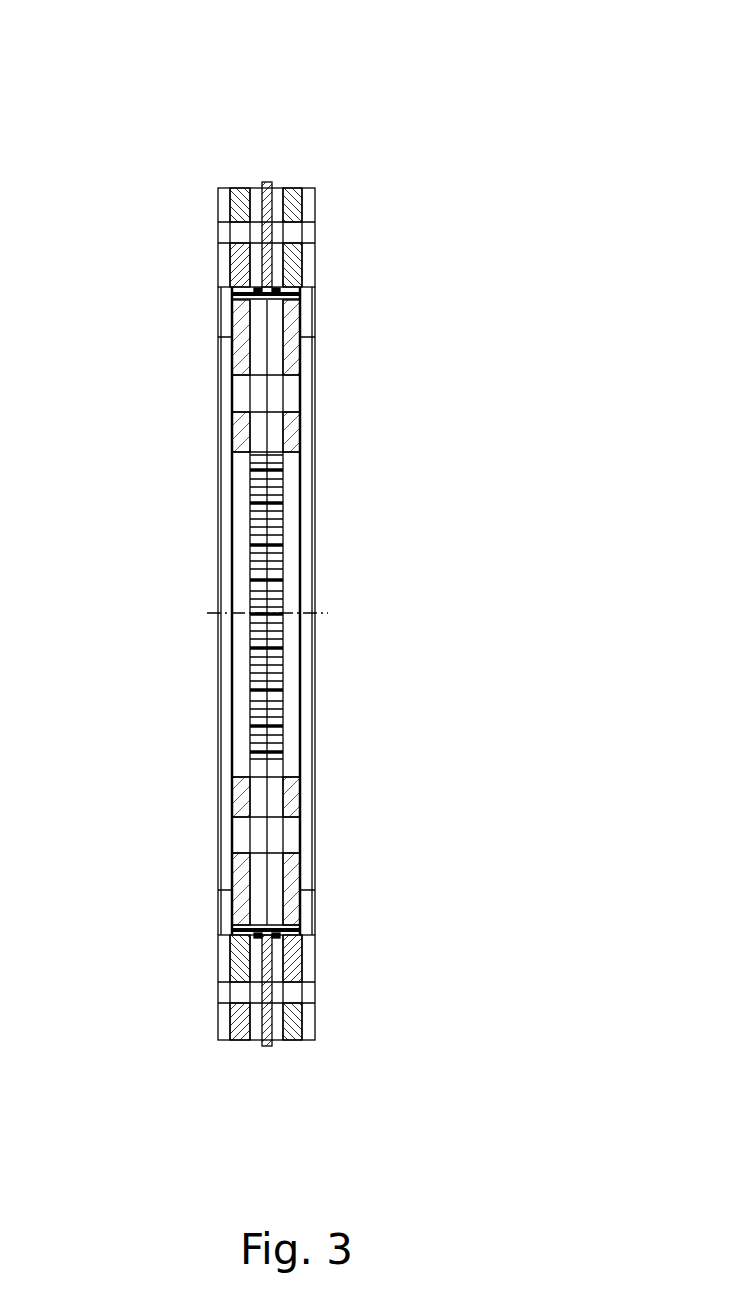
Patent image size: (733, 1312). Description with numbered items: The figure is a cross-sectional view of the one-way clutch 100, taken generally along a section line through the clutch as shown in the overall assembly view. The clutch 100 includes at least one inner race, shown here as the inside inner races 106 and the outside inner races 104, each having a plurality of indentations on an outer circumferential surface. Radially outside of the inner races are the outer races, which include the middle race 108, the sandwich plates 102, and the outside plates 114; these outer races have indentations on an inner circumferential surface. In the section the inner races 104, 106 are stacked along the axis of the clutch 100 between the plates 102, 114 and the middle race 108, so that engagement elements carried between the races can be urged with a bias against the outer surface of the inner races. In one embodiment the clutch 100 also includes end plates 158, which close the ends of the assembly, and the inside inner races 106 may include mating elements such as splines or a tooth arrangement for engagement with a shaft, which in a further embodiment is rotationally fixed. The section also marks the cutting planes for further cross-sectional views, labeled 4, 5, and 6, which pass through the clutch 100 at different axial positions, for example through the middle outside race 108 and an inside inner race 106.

The one-way clutch 100 is at (505, 109).
The sandwich plates 102 is at (254, 186).
The outside inner races 104 is at (243, 337).
The inside inner races 106 is at (260, 435).
The middle race 108 is at (267, 182).
The outside plates 114 is at (242, 187).
The end plates 158 is at (218, 203).
The section line 4 is at (242, 1040).
The section line 5 is at (256, 1046).
The section line 6 is at (263, 1046).